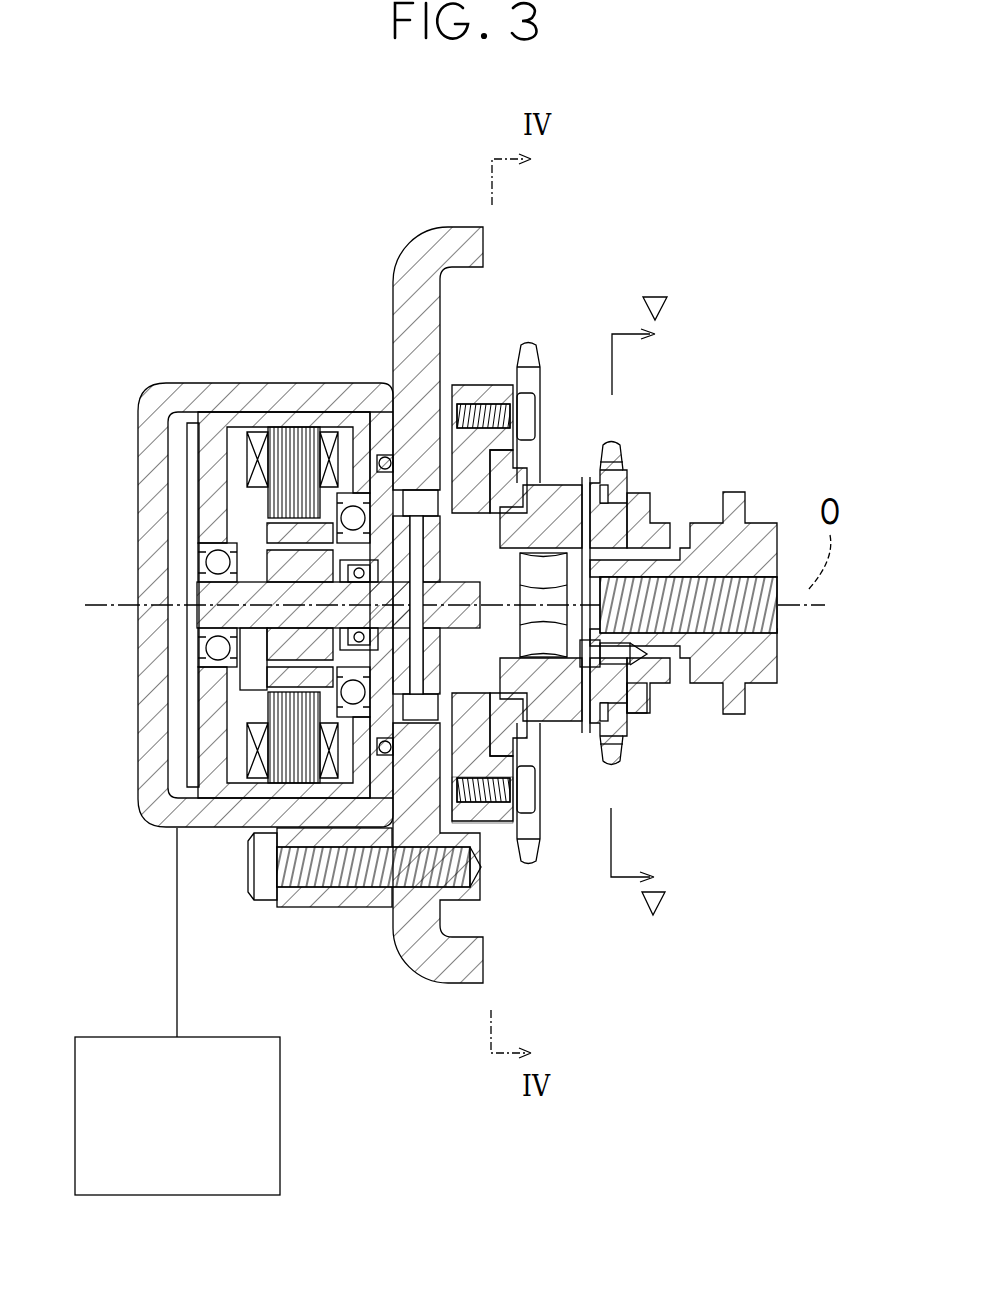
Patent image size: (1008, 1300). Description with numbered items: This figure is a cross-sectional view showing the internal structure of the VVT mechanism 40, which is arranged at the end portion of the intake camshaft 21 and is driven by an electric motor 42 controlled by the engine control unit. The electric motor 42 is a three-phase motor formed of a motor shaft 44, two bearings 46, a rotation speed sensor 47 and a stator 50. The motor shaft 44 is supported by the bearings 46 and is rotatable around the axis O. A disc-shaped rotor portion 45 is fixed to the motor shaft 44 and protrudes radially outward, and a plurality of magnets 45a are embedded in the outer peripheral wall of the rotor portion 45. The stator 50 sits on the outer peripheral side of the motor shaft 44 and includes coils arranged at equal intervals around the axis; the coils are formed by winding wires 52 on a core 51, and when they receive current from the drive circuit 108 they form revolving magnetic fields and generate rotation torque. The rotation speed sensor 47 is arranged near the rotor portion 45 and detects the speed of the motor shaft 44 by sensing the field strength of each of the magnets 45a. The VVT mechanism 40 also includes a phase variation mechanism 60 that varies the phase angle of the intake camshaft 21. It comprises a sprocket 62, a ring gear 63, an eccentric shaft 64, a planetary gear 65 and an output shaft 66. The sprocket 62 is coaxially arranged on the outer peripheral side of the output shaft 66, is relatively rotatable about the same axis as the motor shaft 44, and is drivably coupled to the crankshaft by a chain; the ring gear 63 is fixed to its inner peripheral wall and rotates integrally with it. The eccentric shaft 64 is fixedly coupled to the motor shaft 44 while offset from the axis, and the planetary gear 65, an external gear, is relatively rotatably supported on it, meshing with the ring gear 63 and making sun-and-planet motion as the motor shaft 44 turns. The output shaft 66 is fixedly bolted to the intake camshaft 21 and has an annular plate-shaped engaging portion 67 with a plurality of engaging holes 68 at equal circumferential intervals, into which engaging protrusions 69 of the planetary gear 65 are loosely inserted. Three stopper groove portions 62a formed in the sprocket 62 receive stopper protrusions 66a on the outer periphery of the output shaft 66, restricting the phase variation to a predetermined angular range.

The intake camshaft 21 is at (672, 525).
The VVT mechanism 40 is at (366, 248).
The electric motor 42 is at (140, 827).
The motor shaft 44 is at (190, 618).
The rotor portion 45 is at (200, 590).
The magnets 45a is at (300, 546).
The bearings 46 is at (337, 515).
The rotation speed sensor 47 is at (240, 668).
The stator 50 is at (283, 412).
The core 51 is at (296, 426).
The wires 52 is at (258, 400).
The phase variation mechanism 60 is at (552, 770).
The sprocket 62 is at (560, 583).
The stopper groove portions 62a is at (640, 485).
The ring gear 63 is at (483, 408).
The eccentric shaft 64 is at (482, 563).
The planetary gear 65 is at (496, 818).
The output shaft 66 is at (560, 700).
The stopper protrusions 66a is at (665, 500).
The engaging portion 67 is at (540, 420).
The engaging holes 68 is at (615, 470).
The engaging protrusions 69 is at (522, 478).
The drive circuit 108 is at (282, 1112).